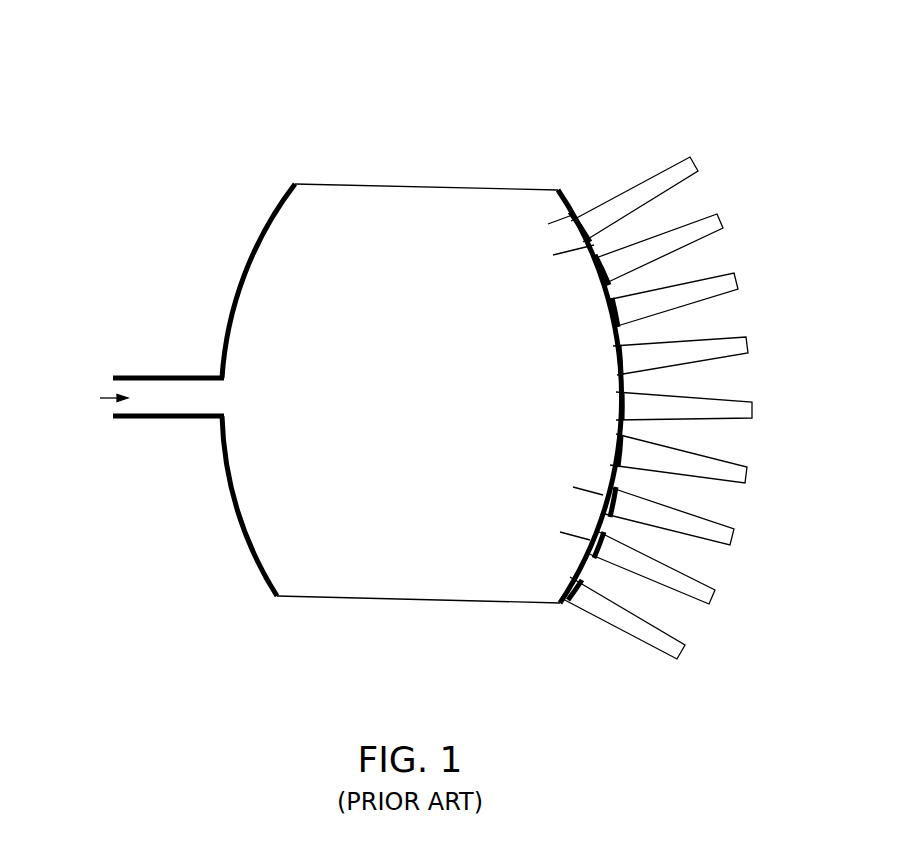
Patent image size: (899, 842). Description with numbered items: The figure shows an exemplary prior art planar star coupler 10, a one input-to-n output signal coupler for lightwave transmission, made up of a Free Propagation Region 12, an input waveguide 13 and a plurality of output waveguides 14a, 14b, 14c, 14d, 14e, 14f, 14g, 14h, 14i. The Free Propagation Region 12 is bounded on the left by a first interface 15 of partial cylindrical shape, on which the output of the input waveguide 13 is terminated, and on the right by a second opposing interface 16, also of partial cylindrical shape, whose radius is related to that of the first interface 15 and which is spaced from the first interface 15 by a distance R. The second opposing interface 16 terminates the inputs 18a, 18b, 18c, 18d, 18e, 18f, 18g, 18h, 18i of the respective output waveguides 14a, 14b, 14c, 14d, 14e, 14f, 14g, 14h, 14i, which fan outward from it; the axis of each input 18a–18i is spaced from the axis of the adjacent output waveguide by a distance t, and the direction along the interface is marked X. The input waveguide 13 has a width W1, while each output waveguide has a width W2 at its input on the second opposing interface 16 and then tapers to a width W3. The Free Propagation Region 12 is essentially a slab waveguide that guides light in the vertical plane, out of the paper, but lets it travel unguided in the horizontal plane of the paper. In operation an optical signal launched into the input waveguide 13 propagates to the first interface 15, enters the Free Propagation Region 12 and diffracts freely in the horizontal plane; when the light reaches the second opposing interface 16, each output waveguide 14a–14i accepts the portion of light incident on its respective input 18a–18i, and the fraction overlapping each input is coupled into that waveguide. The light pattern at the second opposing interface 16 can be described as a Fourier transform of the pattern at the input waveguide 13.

The planar star coupler 10 is at (372, 49).
The Free Propagation Region 12 is at (372, 213).
The input waveguide 13 is at (152, 377).
The output waveguide 14a is at (645, 641).
The output waveguide 14b is at (706, 607).
The output waveguide 14c is at (728, 548).
The output waveguide 14d is at (745, 486).
The output waveguide 14e is at (753, 402).
The output waveguide 14f is at (745, 336).
The output waveguide 14g is at (712, 278).
The output waveguide 14h is at (696, 222).
The output waveguide 14i is at (657, 172).
The first interface 15 is at (250, 262).
The second opposing interface 16 is at (560, 197).
The input of output waveguide 18a is at (570, 577).
The input of output waveguide 18b is at (590, 540).
The input of output waveguide 18c is at (592, 487).
The input of output waveguide 18d is at (617, 450).
The input of output waveguide 18e is at (620, 400).
The input of output waveguide 18f is at (620, 362).
The input of output waveguide 18g is at (614, 302).
The input of output waveguide 18h is at (597, 270).
The input of output waveguide 18i is at (572, 232).
The width of input waveguide W1 is at (115, 483).
The width of output waveguide input W2 is at (578, 270).
The tapered width of output waveguide W3 is at (748, 360).
The distance between interfaces R is at (607, 426).
The direction along boundary X is at (553, 178).
The axis spacing distance t is at (597, 470).